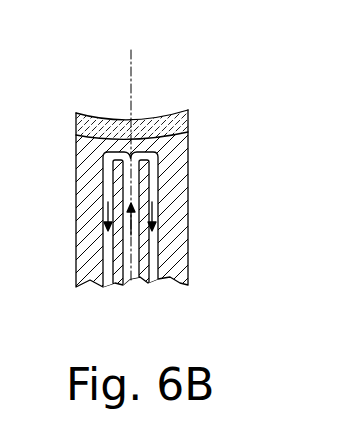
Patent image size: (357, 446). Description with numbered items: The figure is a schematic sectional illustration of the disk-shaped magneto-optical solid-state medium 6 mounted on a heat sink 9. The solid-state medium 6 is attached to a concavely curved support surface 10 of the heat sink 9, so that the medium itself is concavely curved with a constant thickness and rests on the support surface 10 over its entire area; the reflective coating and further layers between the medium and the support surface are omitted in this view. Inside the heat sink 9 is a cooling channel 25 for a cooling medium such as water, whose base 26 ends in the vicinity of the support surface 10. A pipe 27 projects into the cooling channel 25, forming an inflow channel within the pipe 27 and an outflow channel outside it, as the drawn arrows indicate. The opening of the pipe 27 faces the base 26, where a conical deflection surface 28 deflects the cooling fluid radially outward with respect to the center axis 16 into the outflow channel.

The magneto-optical solid-state medium 6 is at (187, 120).
The heat sink 9 is at (78, 202).
The support surface 10 is at (168, 137).
The center axis 16 is at (131, 62).
The cooling channel 25 is at (102, 167).
The base 26 is at (113, 153).
The pipe 27 is at (113, 246).
The conical deflection surface 28 is at (131, 155).